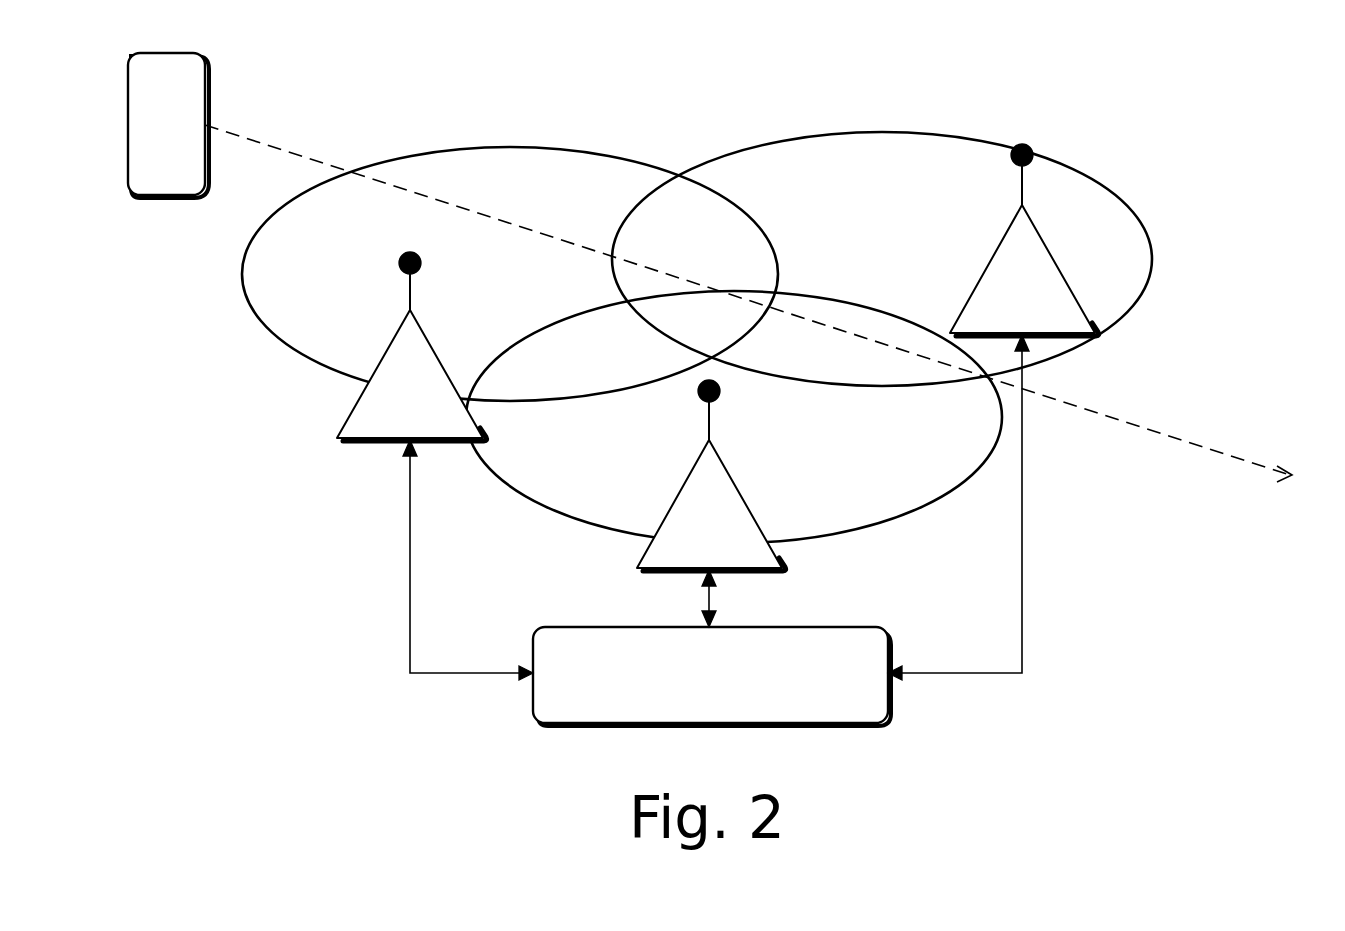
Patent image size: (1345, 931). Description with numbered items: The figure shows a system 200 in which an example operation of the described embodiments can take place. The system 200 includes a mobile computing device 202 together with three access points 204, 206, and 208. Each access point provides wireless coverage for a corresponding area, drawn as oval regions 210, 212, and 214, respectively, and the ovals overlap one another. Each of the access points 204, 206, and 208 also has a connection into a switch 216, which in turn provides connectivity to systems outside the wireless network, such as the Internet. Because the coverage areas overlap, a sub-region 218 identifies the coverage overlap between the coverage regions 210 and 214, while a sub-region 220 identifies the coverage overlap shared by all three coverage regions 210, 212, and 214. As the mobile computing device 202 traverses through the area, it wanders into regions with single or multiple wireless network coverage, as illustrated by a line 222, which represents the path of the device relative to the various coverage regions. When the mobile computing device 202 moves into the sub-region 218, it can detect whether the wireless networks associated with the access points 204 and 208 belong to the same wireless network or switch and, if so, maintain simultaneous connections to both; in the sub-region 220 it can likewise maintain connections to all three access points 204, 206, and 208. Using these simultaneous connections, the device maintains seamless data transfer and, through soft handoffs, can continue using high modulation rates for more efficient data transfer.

The system 200 is at (1053, 81).
The mobile computing device 202 is at (168, 125).
The access point 204 is at (412, 346).
The access point 206 is at (711, 475).
The access point 208 is at (1024, 240).
The oval region 210 is at (478, 148).
The oval region 212 is at (583, 522).
The oval region 214 is at (1122, 205).
The switch 216 is at (716, 530).
The sub-region 218 is at (701, 234).
The sub-region 220 is at (701, 318).
The line 222 is at (1233, 458).